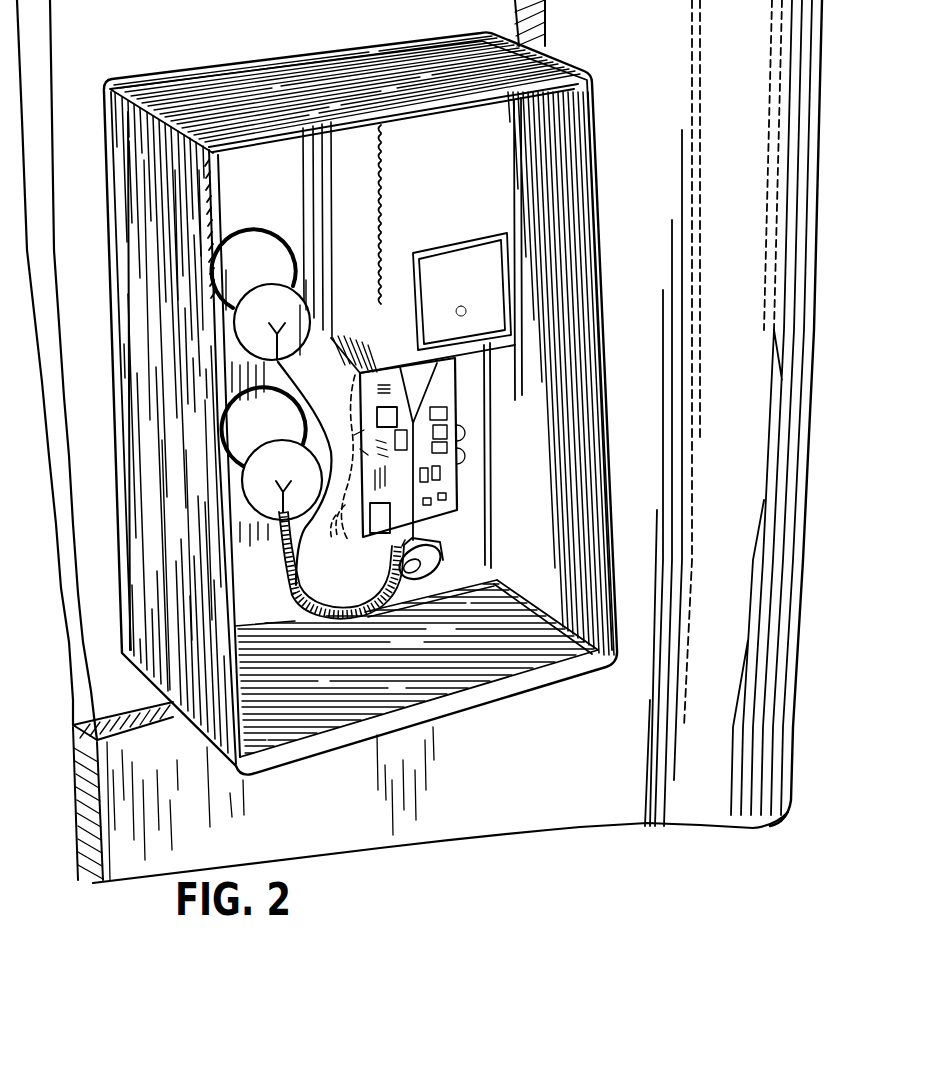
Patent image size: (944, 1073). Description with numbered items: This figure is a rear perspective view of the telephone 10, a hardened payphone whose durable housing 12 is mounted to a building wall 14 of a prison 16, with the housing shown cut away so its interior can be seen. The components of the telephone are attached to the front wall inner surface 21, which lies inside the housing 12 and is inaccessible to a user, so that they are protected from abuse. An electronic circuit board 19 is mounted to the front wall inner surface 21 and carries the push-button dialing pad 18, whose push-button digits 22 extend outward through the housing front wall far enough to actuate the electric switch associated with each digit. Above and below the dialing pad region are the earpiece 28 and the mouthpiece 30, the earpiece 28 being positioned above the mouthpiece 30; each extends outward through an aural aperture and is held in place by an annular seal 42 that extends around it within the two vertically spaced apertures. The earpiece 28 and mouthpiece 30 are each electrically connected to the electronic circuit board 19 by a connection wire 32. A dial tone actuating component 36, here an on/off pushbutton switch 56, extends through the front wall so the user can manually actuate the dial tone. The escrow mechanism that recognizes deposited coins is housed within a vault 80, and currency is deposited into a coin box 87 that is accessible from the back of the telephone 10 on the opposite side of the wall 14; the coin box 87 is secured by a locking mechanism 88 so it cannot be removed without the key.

The telephone 10 is at (568, 47).
The housing 12 is at (602, 291).
The building wall 14 is at (790, 196).
The prison 16 is at (816, 275).
The push-button dialing pad 18 is at (460, 363).
The electronic circuit board 19 is at (460, 401).
The front wall inner surface 21 is at (333, 396).
The push-button digits 22 is at (374, 562).
The earpiece 28 is at (258, 332).
The mouthpiece 30 is at (273, 468).
The connection wire 32 is at (351, 620).
The dial tone actuating component 36 is at (415, 538).
The annular seals 42 is at (301, 290).
The on/off pushbutton switch 56 is at (430, 566).
The vault 80 is at (457, 199).
The coin box 87 is at (466, 293).
The locking mechanism 88 is at (461, 310).